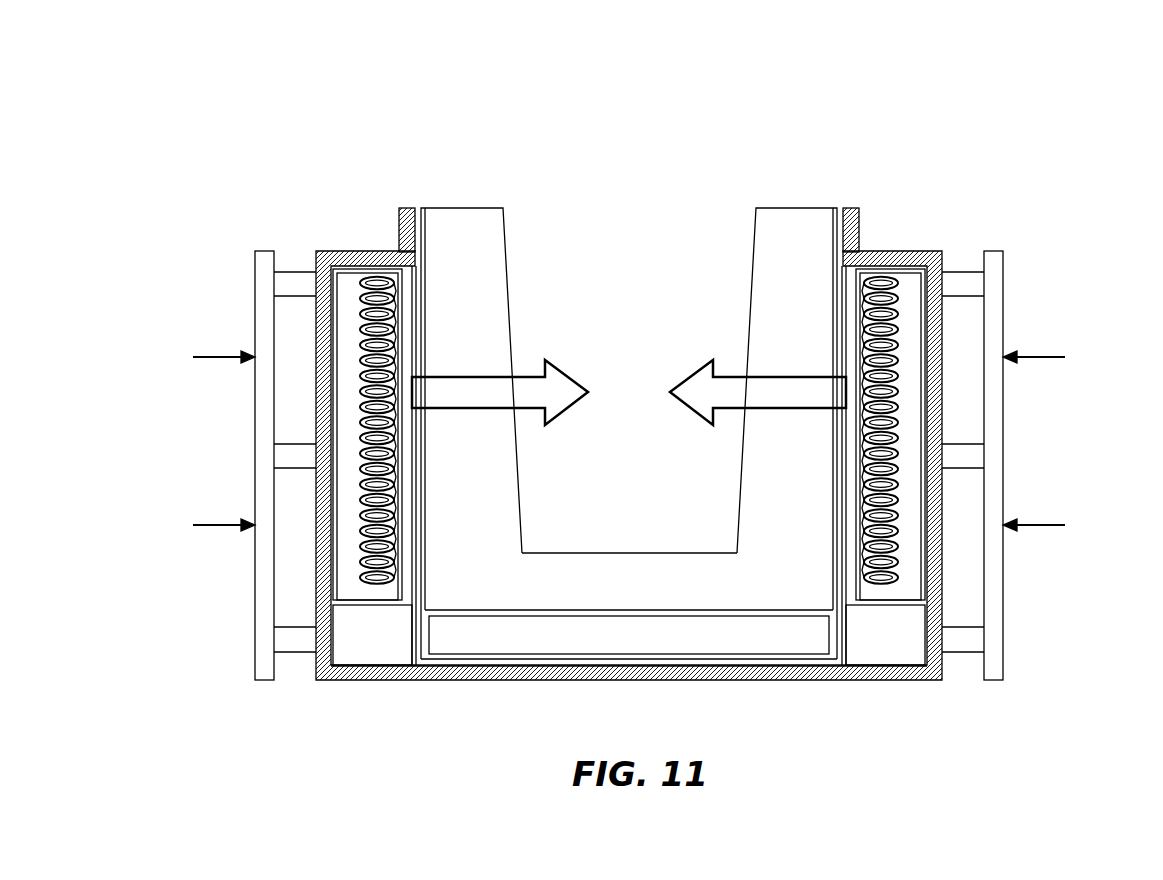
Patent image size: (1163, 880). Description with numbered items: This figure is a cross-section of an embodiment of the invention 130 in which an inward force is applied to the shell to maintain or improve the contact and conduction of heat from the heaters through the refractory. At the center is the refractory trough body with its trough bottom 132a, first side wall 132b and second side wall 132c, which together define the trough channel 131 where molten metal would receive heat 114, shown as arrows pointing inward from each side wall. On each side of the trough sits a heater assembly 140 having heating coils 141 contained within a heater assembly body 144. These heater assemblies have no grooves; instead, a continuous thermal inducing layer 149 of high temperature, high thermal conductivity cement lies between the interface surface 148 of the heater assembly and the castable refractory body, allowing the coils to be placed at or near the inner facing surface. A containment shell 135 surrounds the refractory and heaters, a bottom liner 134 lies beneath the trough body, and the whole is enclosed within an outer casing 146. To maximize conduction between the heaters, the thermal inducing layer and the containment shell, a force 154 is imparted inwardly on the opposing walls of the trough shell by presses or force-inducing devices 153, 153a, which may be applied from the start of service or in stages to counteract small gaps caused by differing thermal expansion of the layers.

The embodiment of the invention 130 is at (680, 138).
The cavity 131 is at (629, 405).
The trough bottom 132a is at (629, 573).
The first side wall 132b is at (507, 249).
The second side wall 132c is at (770, 246).
The bottom liner 134 is at (752, 640).
The containment shell 135 is at (405, 232).
The heater assembly 140 is at (631, 373).
The heating coils 141 is at (384, 307).
The heater assembly body 144 is at (350, 408).
The outer casing 146 is at (330, 252).
The interface surface 148 is at (418, 486).
The thermal inducing layer 149 is at (408, 341).
The force-inducing device 153 is at (263, 606).
The force-inducing device 153a is at (297, 281).
The force 154 is at (218, 357).
The heat 114 is at (700, 365).